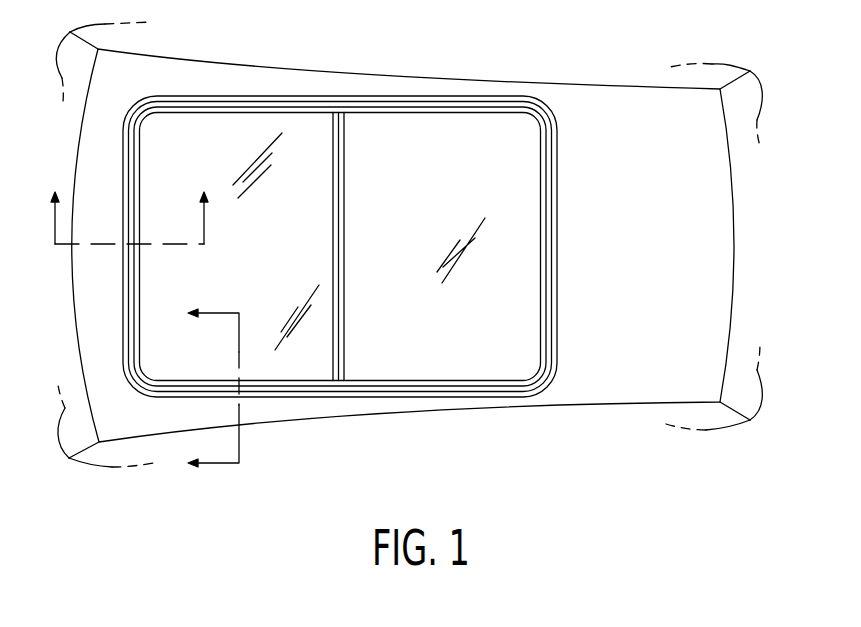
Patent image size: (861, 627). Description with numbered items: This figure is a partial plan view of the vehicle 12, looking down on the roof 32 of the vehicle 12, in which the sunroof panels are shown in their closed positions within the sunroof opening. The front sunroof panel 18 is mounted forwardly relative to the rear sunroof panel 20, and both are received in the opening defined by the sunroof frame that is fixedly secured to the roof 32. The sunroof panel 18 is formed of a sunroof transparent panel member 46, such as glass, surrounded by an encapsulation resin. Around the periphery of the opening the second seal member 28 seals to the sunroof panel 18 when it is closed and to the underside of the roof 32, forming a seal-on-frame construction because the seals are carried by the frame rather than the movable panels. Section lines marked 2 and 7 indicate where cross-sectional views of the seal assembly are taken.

The vehicle 12 is at (713, 77).
The roof 32 is at (693, 255).
The second seal member 28 is at (287, 103).
The sunroof panel 18 is at (298, 130).
The rear sunroof panel 20 is at (425, 123).
The sunroof transparent panel member 46 is at (294, 246).
The section line 7- 7 is at (131, 203).
The section line 2- 2 is at (203, 389).